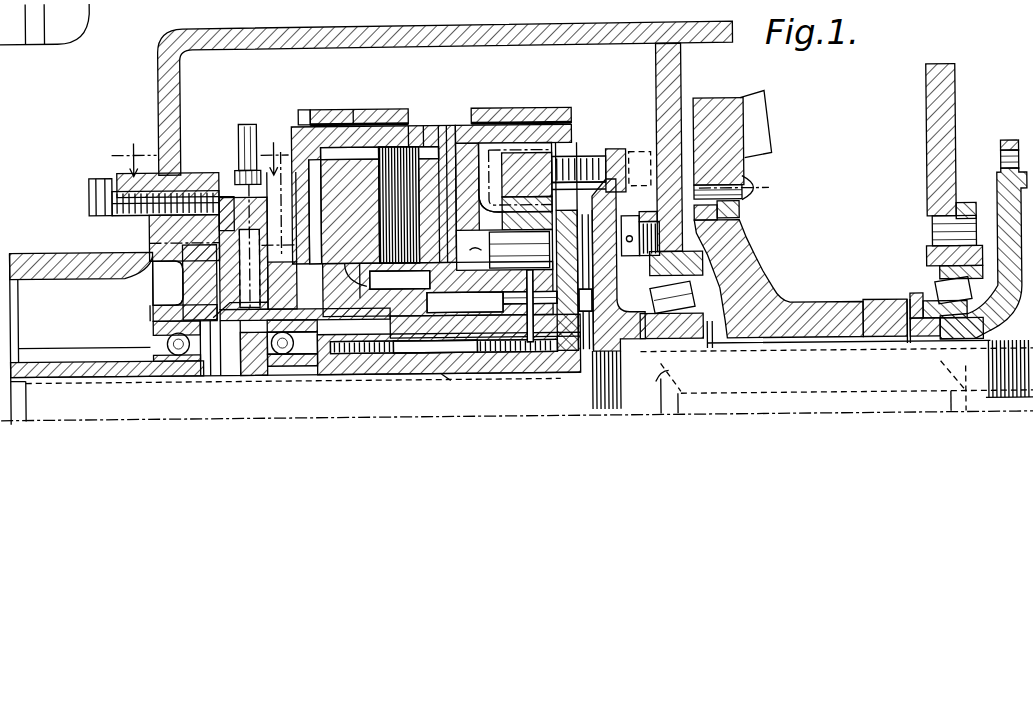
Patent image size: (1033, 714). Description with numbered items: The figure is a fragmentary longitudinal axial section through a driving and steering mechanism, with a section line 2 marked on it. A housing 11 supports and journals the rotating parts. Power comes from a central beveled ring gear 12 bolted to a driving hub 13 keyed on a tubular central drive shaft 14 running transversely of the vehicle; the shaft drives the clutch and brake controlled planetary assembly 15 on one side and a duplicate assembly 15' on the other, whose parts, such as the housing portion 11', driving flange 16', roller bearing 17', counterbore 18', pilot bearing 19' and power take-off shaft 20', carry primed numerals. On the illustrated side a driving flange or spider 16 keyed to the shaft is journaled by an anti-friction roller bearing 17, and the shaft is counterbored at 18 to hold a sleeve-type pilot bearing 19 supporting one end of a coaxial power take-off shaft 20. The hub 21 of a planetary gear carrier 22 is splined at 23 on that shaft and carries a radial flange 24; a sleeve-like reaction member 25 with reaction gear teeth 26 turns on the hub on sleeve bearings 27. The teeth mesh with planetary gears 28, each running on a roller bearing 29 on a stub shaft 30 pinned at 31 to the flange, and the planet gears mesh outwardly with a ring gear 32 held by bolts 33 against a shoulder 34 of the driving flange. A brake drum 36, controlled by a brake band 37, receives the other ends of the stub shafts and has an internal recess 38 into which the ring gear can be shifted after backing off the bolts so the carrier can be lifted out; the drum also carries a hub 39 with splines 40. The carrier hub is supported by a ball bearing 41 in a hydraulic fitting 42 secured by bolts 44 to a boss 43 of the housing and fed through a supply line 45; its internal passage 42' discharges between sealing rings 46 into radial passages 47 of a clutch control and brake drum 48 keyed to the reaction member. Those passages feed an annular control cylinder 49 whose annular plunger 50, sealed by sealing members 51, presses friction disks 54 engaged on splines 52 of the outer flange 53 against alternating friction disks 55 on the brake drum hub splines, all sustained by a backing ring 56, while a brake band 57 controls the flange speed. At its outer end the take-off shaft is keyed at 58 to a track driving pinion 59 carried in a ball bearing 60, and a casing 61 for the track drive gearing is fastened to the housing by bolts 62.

The section line 2 is at (202, 189).
The housing 11 is at (445, 128).
The housing 11' is at (966, 154).
The central beveled ring gear 12 is at (763, 176).
The driving hub 13 is at (783, 308).
The tubular central drive shaft 14 is at (832, 356).
The clutch and brake controlled planetary assembly 15 is at (595, 210).
The planetary assembly 15' is at (1004, 121).
The driving flange or spider 16 is at (614, 317).
The driving flange 16' is at (984, 283).
The anti-friction roller bearing 17 is at (715, 288).
The roller bearing 17' is at (937, 292).
The counterbore 18 is at (836, 366).
The counterbore 18' is at (918, 387).
The sleeve-type pilot bearing 19 is at (672, 374).
The pilot bearing 19' is at (948, 383).
The power take-off shaft 20 is at (400, 382).
The power take-off shaft 20' is at (994, 420).
The hub 21 is at (437, 364).
The planetary gear carrier 22 is at (572, 302).
The spline 23 is at (487, 384).
The radially extending flange 24 is at (548, 318).
The sleeve-like reaction member 25 is at (420, 334).
The reaction gear teeth 26 is at (503, 300).
The sleeve bearings 27 is at (520, 335).
The planetary gears 28 is at (478, 253).
The roller-type bearing 29 is at (580, 112).
The stub shaft 30 is at (519, 250).
The pin 31 is at (578, 213).
The ring gear 32 is at (530, 125).
The bolts 33 is at (582, 157).
The shoulder 34 is at (610, 158).
The brake drum 36 is at (556, 125).
The brake band 37 is at (474, 110).
The annular internal recess 38 is at (503, 140).
The hub 39 is at (465, 303).
The teeth or splines 40 is at (402, 280).
The ball bearing 41 is at (241, 325).
The annular hydraulic fitting 42 is at (100, 226).
The internal passage 42' is at (216, 369).
The boss 43 is at (190, 172).
The bolts 44 is at (258, 240).
The supply line 45 is at (246, 132).
The annular sealing rings 46 is at (278, 305).
The radial passages 47 is at (323, 335).
The clutch control and brake drum 48 is at (300, 150).
The annular control cylinder 49 is at (331, 110).
The annular plunger 50 is at (372, 140).
The sealing members 51 is at (357, 110).
The teeth or splines 52 is at (400, 108).
The outer flange 53 is at (445, 125).
The friction disks 54 is at (411, 114).
The friction disks 55 is at (466, 115).
The backing ring 56 is at (462, 232).
The brake band 57 is at (318, 110).
The key 58 is at (45, 388).
The track driving pinion 59 is at (82, 348).
The ball bearing 60 is at (170, 368).
The casing 61 is at (68, 250).
The bolts 62 is at (92, 190).